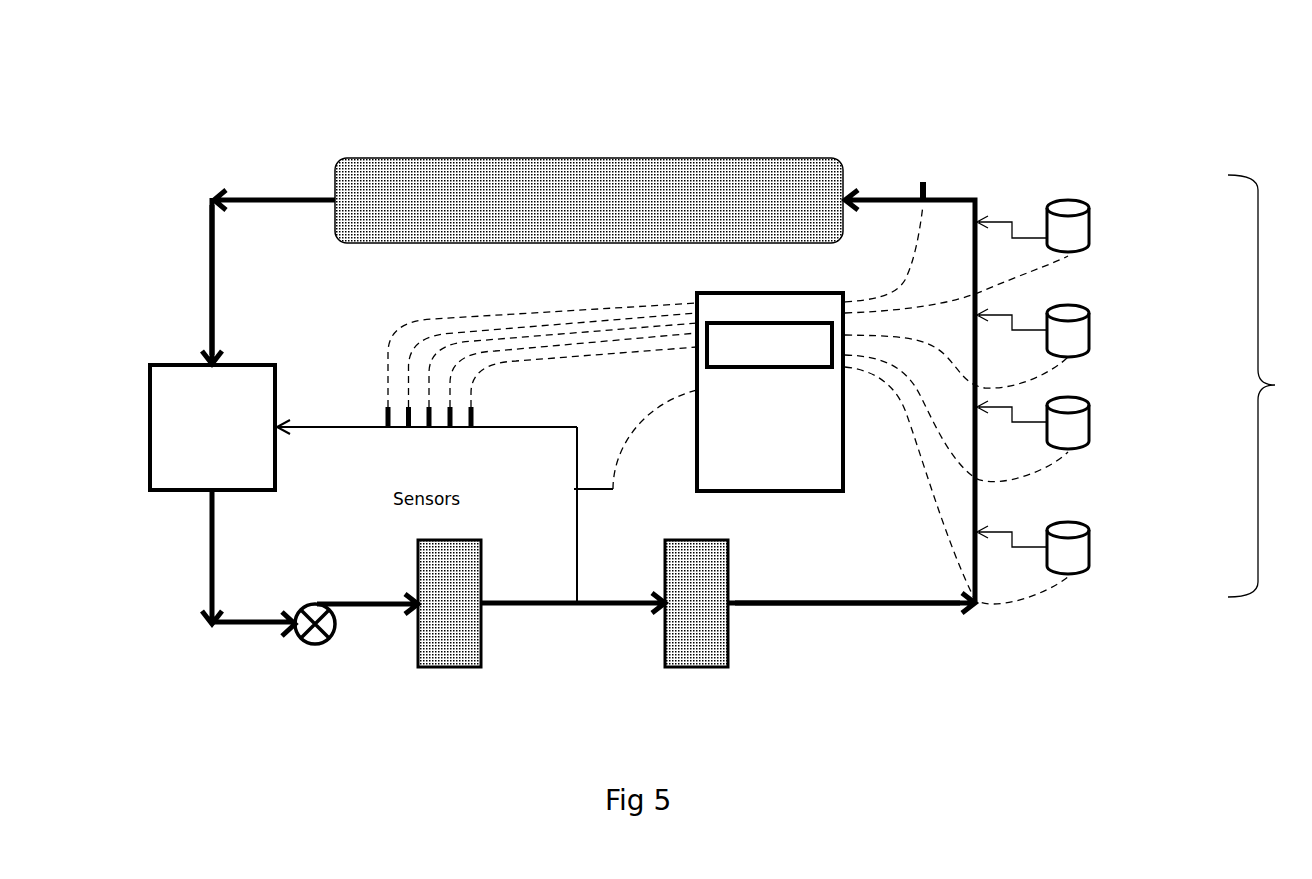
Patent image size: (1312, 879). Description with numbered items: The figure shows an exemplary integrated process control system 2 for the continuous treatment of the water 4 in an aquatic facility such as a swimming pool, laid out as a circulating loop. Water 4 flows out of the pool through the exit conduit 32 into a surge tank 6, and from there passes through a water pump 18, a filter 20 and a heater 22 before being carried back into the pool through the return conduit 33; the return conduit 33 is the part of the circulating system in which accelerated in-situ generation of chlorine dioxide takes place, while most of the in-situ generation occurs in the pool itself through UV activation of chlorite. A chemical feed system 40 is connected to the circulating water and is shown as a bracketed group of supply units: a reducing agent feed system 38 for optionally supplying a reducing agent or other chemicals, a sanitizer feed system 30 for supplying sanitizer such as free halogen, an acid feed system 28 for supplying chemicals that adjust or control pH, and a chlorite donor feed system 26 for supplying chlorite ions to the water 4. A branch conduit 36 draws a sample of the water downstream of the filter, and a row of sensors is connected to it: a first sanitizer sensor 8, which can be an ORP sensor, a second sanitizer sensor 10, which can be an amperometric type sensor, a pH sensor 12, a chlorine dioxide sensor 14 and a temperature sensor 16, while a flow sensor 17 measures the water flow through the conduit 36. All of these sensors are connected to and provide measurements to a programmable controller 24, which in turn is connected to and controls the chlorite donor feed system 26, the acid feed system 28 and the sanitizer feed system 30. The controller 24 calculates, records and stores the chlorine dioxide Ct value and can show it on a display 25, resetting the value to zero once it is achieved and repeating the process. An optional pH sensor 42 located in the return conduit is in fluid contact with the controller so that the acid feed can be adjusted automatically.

The integrated process control system 2 is at (938, 82).
The water 4 is at (552, 158).
The surge tank 6 is at (215, 393).
The first sanitizer sensor 8 is at (380, 430).
The second sanitizer sensor 10 is at (403, 430).
The pH sensor 12 is at (427, 430).
The chlorine dioxide sensor 14 is at (450, 430).
The temperature sensor 16 is at (478, 430).
The flow sensor 17 is at (603, 493).
The water pump 18 is at (316, 645).
The filter 20 is at (462, 641).
The heater 22 is at (708, 641).
The programmable controller 24 is at (781, 476).
The display 25 is at (781, 352).
The chlorite donor feed system 26 is at (1078, 558).
The acid feed system 28 is at (1078, 434).
The sanitizer feed system 30 is at (1078, 341).
The exit conduit 32 is at (210, 300).
The return conduit 33 is at (800, 607).
The conduit 36 is at (575, 573).
The reducing agent feed system 38 is at (1078, 246).
The chemical feed system 40 is at (1267, 386).
The pH sensor in the conduit 42 is at (930, 218).